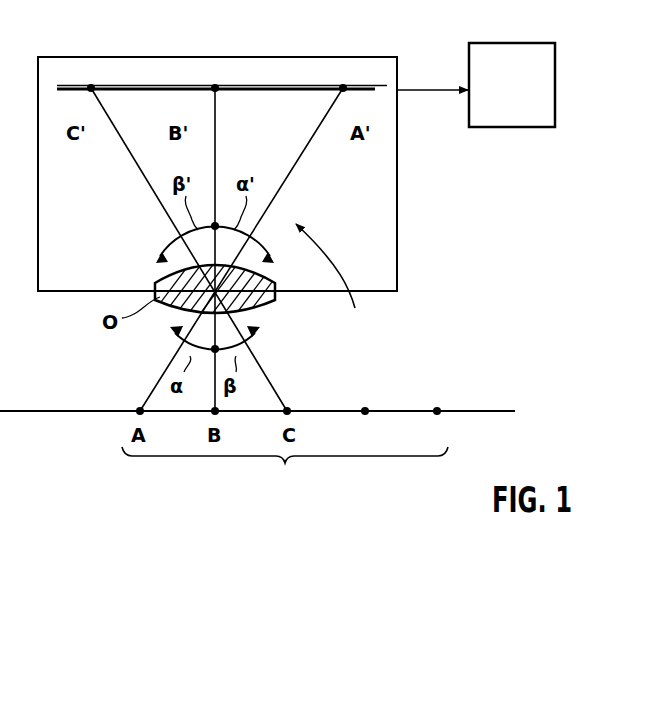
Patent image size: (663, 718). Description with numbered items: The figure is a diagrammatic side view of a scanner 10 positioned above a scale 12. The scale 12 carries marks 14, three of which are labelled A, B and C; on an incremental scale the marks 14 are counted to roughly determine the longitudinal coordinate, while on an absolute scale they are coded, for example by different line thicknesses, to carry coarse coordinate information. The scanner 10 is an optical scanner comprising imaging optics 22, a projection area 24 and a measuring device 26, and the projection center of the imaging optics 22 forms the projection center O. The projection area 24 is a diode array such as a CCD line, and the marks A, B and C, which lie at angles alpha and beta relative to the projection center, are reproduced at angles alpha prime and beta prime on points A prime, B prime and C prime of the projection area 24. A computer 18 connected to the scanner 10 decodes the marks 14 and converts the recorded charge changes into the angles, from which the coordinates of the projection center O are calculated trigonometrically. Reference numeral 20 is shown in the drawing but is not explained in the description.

The scanner 10 is at (397, 252).
The scale 12 is at (38, 415).
The marks 14 is at (285, 474).
The computer 18 is at (534, 73).
The scattered light beam 20 is at (338, 283).
The imaging optics 22 is at (268, 306).
The projection area 24 is at (143, 88).
The measuring device 26 is at (424, 216).